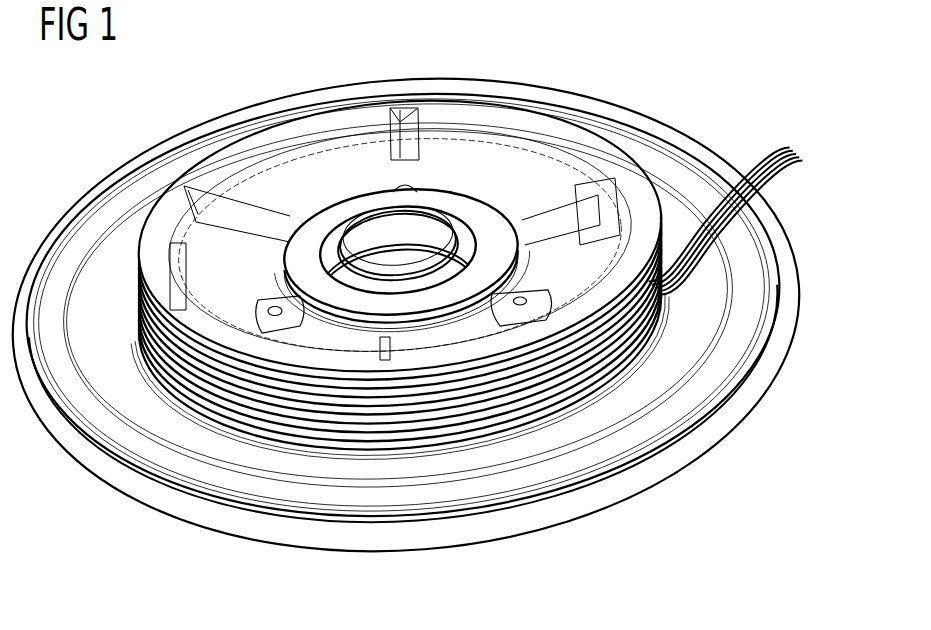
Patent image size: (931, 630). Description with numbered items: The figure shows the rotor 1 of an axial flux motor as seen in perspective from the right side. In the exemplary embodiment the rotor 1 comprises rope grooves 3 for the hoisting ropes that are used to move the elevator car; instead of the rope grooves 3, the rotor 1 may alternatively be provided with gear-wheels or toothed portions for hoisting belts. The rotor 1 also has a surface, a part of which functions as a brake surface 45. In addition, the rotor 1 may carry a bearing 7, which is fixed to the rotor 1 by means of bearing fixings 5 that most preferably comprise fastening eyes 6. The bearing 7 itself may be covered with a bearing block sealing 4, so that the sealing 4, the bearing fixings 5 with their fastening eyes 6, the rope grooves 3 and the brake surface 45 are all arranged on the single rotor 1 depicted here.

The rotor 1 is at (780, 611).
The rope grooves 3 is at (729, 214).
The bearing block sealing 4 is at (452, 200).
The bearing fixings 5 is at (517, 309).
The fastening eyes 6 is at (547, 300).
The bearing 7 is at (343, 330).
The brake surface 45 is at (672, 462).